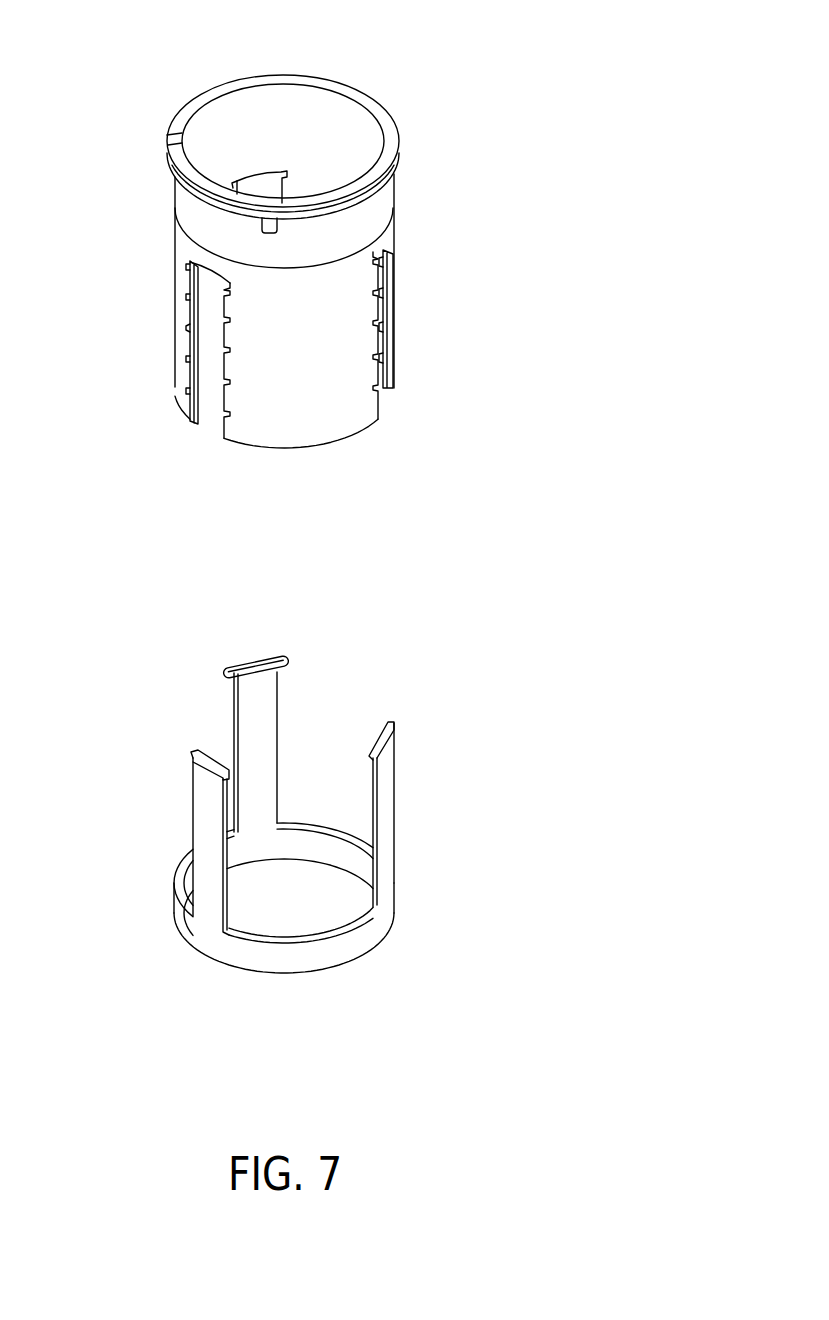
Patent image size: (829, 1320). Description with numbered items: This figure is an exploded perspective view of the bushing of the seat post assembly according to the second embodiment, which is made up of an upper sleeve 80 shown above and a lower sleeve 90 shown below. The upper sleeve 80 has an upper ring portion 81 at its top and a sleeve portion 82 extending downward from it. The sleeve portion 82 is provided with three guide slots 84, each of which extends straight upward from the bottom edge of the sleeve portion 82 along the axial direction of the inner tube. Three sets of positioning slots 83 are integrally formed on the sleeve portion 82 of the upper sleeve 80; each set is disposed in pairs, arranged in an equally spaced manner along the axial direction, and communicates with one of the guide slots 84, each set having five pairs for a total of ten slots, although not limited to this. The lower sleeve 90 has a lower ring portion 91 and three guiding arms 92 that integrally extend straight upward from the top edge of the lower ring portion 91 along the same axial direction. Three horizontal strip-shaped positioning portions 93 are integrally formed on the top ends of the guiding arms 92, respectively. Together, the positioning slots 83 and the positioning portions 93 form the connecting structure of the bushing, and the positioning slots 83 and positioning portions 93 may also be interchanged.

The upper sleeve 80 is at (310, 267).
The upper ring portion 81 is at (392, 152).
The sleeve portion 82 is at (378, 211).
The positioning slots 83 is at (195, 390).
The guide slots 84 is at (208, 423).
The lower sleeve 90 is at (312, 807).
The lower ring portion 91 is at (350, 943).
The guiding arms 92 is at (263, 742).
The positioning portions 93 is at (253, 670).